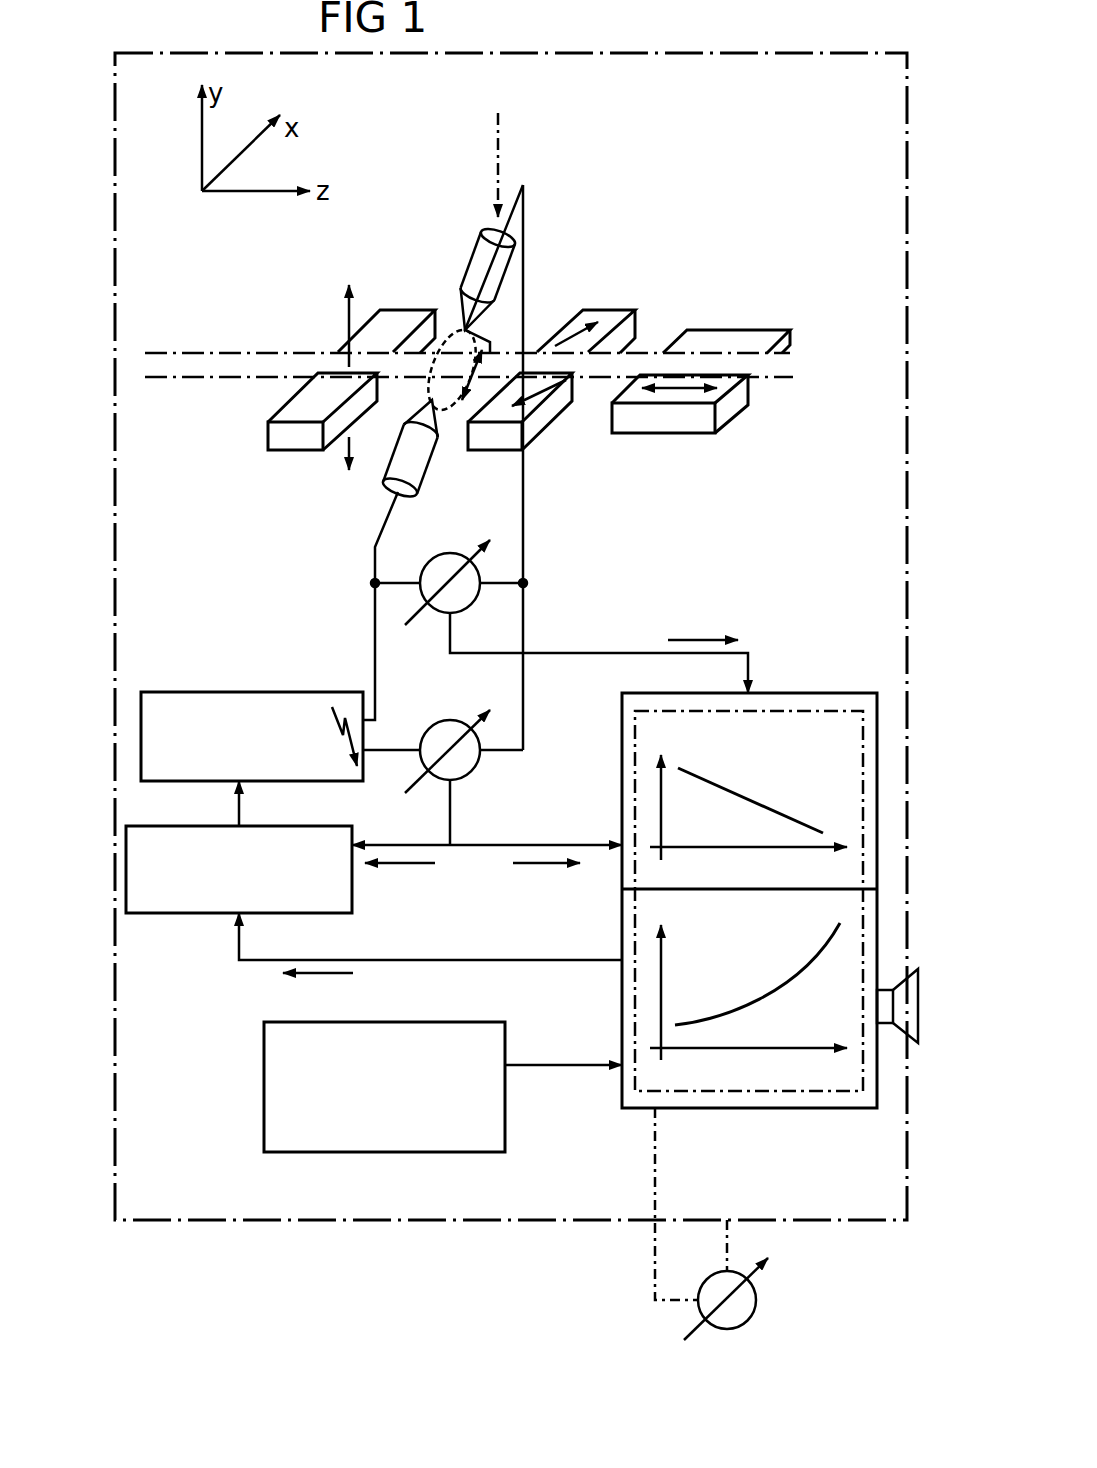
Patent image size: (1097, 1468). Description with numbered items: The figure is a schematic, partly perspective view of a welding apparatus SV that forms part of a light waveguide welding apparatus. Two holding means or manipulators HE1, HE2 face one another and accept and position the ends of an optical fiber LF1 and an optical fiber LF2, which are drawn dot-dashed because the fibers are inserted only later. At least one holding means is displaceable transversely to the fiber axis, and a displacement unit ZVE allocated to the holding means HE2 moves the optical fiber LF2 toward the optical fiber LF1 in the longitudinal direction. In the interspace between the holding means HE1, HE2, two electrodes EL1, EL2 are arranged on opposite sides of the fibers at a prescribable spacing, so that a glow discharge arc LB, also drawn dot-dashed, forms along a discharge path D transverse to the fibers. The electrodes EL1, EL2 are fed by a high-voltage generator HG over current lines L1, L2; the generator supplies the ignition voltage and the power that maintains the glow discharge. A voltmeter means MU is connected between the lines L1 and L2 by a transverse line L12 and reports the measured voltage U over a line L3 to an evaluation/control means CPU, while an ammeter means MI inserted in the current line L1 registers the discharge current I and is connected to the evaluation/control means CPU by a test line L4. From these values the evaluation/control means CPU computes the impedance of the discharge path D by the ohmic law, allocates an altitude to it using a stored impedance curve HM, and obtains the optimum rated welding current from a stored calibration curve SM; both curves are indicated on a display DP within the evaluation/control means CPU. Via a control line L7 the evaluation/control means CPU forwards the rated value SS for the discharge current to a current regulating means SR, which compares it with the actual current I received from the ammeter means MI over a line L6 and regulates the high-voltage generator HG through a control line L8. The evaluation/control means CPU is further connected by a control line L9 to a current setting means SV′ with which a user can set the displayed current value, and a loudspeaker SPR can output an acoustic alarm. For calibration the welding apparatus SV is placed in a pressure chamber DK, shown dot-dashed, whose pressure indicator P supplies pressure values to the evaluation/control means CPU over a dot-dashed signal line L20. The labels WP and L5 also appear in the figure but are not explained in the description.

The workpiece feed direction WP is at (500, 132).
The current line L1 is at (525, 228).
The first welding electrode EL1 is at (487, 252).
The second welding electrode EL2 is at (392, 470).
The glow discharge arc LB is at (448, 330).
The discharge path D is at (500, 342).
The optical fiber LF1 is at (180, 353).
The optical fiber LF2 is at (792, 355).
The holding means HE1 is at (268, 436).
The holding means HE2 is at (538, 433).
The displacement unit ZVE is at (650, 433).
The voltmeter means MU is at (450, 553).
The ammeter means MI is at (440, 722).
The current line L2 is at (375, 623).
The line L3 is at (635, 653).
The test line L4 is at (452, 812).
The fifth conductor L5 is at (580, 845).
The line L6 is at (385, 845).
The control line L7 is at (558, 965).
The control line L8 is at (239, 808).
The control line L9 is at (558, 1070).
The transverse line L12 is at (502, 582).
The signal line L20 is at (655, 1188).
The measured voltage value U is at (703, 624).
The discharge current I is at (472, 881).
The rated value for the glow discharge current SS is at (318, 990).
The high-voltage generator HG is at (178, 692).
The current regulating means SR is at (165, 913).
The current setting means SV′ is at (264, 1065).
The welding apparatus SV is at (228, 1165).
The evaluation/control means CPU is at (746, 1108).
The display DP is at (826, 711).
The measured impedance curve HM is at (760, 803).
The calibration measured curve SM is at (775, 985).
The loudspeaker SPR is at (910, 1020).
The pressure chamber DK is at (385, 1220).
The pressure indicator P is at (757, 1300).